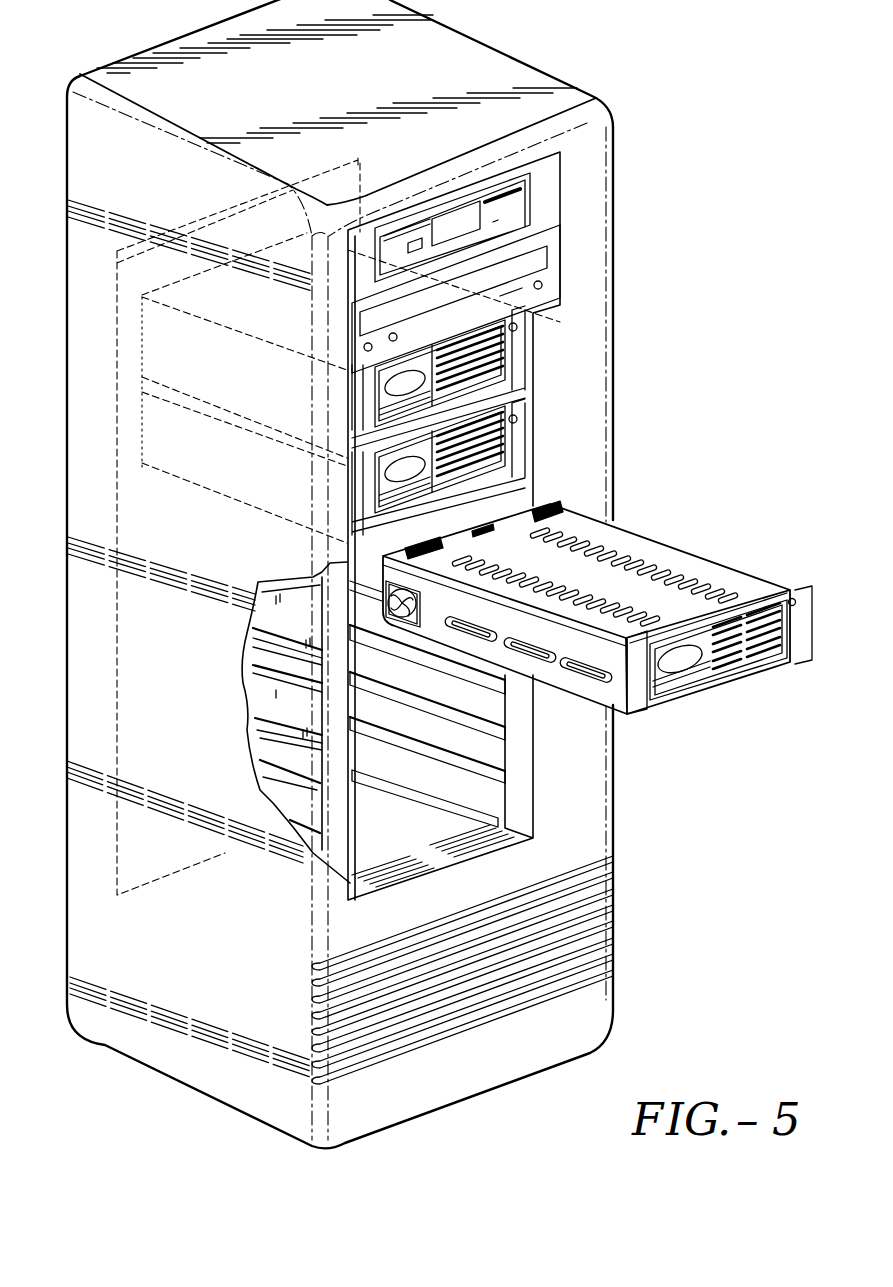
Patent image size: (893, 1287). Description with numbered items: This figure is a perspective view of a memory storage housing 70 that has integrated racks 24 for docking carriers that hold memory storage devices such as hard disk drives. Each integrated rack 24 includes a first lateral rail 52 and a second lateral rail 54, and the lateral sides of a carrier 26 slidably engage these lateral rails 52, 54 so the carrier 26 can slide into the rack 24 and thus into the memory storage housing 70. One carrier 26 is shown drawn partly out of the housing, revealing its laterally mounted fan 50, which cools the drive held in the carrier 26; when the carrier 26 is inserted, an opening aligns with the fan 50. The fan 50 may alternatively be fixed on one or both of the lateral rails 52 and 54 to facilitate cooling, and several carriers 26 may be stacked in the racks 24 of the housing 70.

The memory storage housing 70 is at (603, 57).
The carrier 26 is at (738, 571).
The fan 50 is at (402, 623).
The first lateral rail 52 is at (292, 708).
The second lateral rail 54 is at (503, 726).
The rack 24 is at (497, 751).